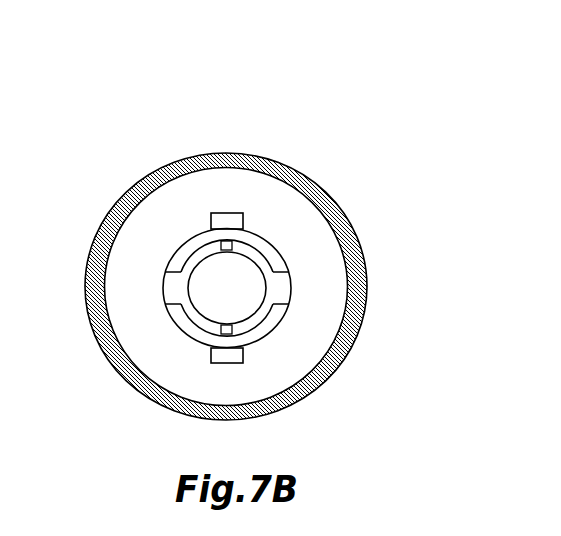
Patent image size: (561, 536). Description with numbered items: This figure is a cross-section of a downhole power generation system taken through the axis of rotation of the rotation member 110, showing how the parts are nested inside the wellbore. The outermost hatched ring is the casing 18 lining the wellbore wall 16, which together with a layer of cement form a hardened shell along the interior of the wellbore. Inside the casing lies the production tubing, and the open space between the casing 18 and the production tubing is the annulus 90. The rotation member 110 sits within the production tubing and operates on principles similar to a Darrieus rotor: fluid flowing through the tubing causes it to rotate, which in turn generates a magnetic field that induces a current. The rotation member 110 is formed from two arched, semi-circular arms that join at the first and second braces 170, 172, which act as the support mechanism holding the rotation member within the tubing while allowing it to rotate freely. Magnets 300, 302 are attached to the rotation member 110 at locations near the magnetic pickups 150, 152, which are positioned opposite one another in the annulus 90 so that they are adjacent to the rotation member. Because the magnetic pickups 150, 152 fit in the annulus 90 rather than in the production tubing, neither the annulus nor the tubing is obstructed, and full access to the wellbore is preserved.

The wall 16 is at (170, 163).
The casing 18 is at (160, 407).
The annulus 90 is at (160, 220).
The rotation member 110 is at (193, 323).
The magnetic pickup 150 is at (226, 213).
The magnetic pickup 152 is at (227, 363).
The first brace 170 is at (168, 284).
The second brace 172 is at (287, 289).
The magnet 300 is at (233, 328).
The magnet 302 is at (233, 243).